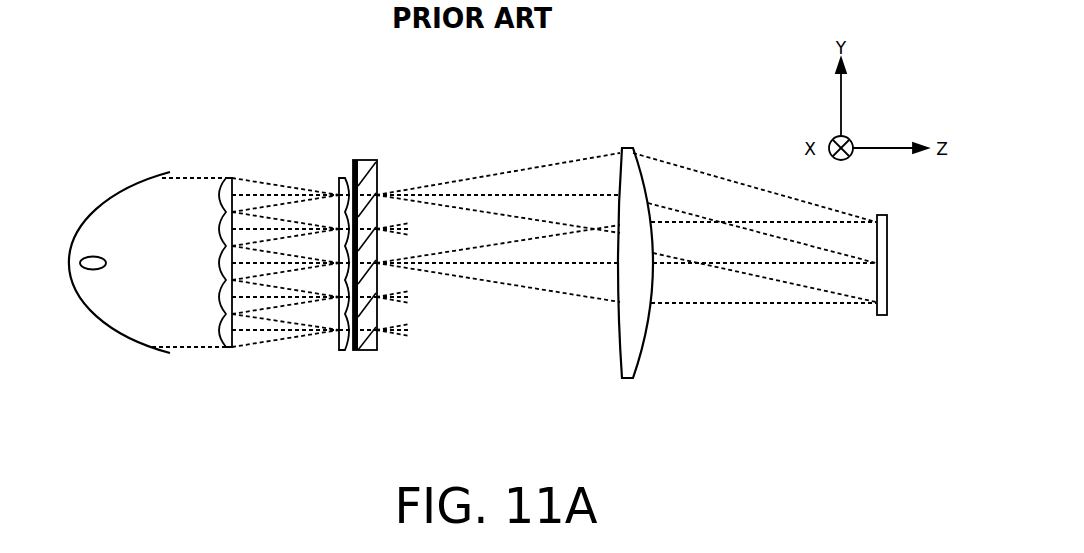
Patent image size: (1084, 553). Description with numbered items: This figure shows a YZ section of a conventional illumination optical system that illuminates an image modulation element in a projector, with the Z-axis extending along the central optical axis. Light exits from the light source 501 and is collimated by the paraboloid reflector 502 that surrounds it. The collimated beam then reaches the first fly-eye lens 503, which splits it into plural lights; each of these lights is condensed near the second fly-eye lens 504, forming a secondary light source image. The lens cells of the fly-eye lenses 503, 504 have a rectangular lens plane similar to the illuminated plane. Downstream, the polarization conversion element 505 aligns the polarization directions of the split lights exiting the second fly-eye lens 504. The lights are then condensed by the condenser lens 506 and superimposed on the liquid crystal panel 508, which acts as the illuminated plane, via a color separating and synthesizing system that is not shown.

The light source 501 is at (93, 258).
The paraboloid reflector 502 is at (122, 338).
The first fly-eye lens 503 is at (228, 345).
The second fly-eye lens 504 is at (338, 340).
The polarization conversion element 505 is at (368, 353).
The condenser lens 506 is at (627, 318).
The liquid crystal panel 508 is at (885, 316).